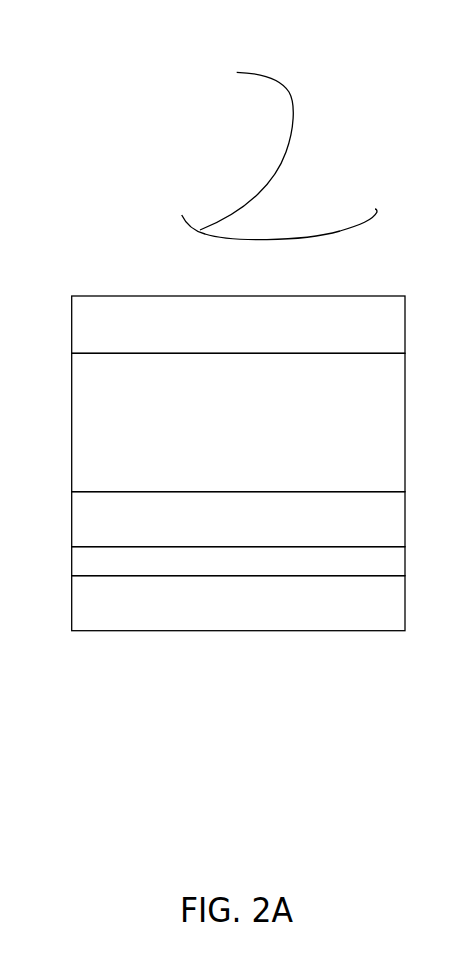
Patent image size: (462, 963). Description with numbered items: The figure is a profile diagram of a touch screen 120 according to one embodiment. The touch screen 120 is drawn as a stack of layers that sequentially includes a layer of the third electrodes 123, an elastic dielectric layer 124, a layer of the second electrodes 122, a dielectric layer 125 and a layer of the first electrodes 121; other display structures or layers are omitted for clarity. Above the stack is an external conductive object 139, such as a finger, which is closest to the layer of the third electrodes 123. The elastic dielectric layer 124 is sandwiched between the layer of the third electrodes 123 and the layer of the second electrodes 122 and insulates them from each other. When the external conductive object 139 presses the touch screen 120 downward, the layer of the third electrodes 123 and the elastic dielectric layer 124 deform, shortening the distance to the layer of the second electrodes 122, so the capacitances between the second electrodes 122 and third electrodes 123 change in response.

The touch screen 120 is at (182, 215).
The external conductive object 139 is at (234, 146).
The layer of the first electrodes 121 is at (255, 615).
The layer of the second electrodes 122 is at (255, 533).
The layer of the third electrodes 123 is at (255, 336).
The elastic dielectric layer 124 is at (255, 435).
The dielectric layer 125 is at (255, 574).